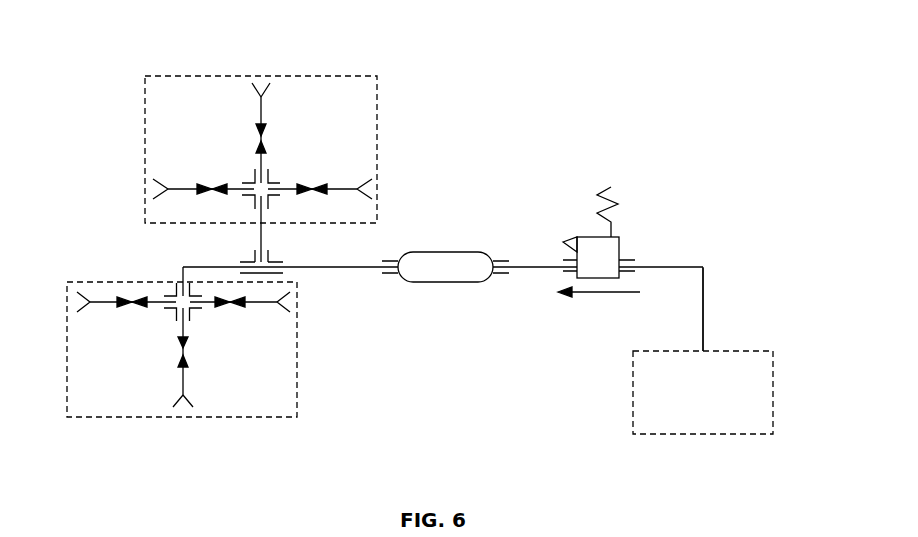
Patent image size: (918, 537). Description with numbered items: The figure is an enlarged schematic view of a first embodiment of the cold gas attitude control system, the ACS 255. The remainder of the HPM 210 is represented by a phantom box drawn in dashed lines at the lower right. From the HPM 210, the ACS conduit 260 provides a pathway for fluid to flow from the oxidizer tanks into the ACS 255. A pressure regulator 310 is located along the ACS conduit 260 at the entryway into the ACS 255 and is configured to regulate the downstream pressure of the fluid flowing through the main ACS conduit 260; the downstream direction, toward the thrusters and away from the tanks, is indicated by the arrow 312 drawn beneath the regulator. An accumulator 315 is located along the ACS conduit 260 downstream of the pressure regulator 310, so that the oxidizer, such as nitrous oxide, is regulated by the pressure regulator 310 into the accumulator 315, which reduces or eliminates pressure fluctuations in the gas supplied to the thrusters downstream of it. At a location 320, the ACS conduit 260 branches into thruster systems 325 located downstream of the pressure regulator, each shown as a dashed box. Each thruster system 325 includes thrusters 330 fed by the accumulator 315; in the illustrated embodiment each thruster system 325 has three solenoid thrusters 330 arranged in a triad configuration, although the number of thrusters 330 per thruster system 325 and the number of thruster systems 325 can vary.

The ACS 255 is at (127, 47).
The thruster system 325 is at (378, 150).
The thruster 330 is at (263, 140).
The location 320 is at (272, 256).
The accumulator 315 is at (443, 252).
The pressure regulator 310 is at (621, 246).
The arrow 312 is at (596, 294).
The ACS conduit 260 is at (703, 307).
The HPM 210 is at (774, 390).